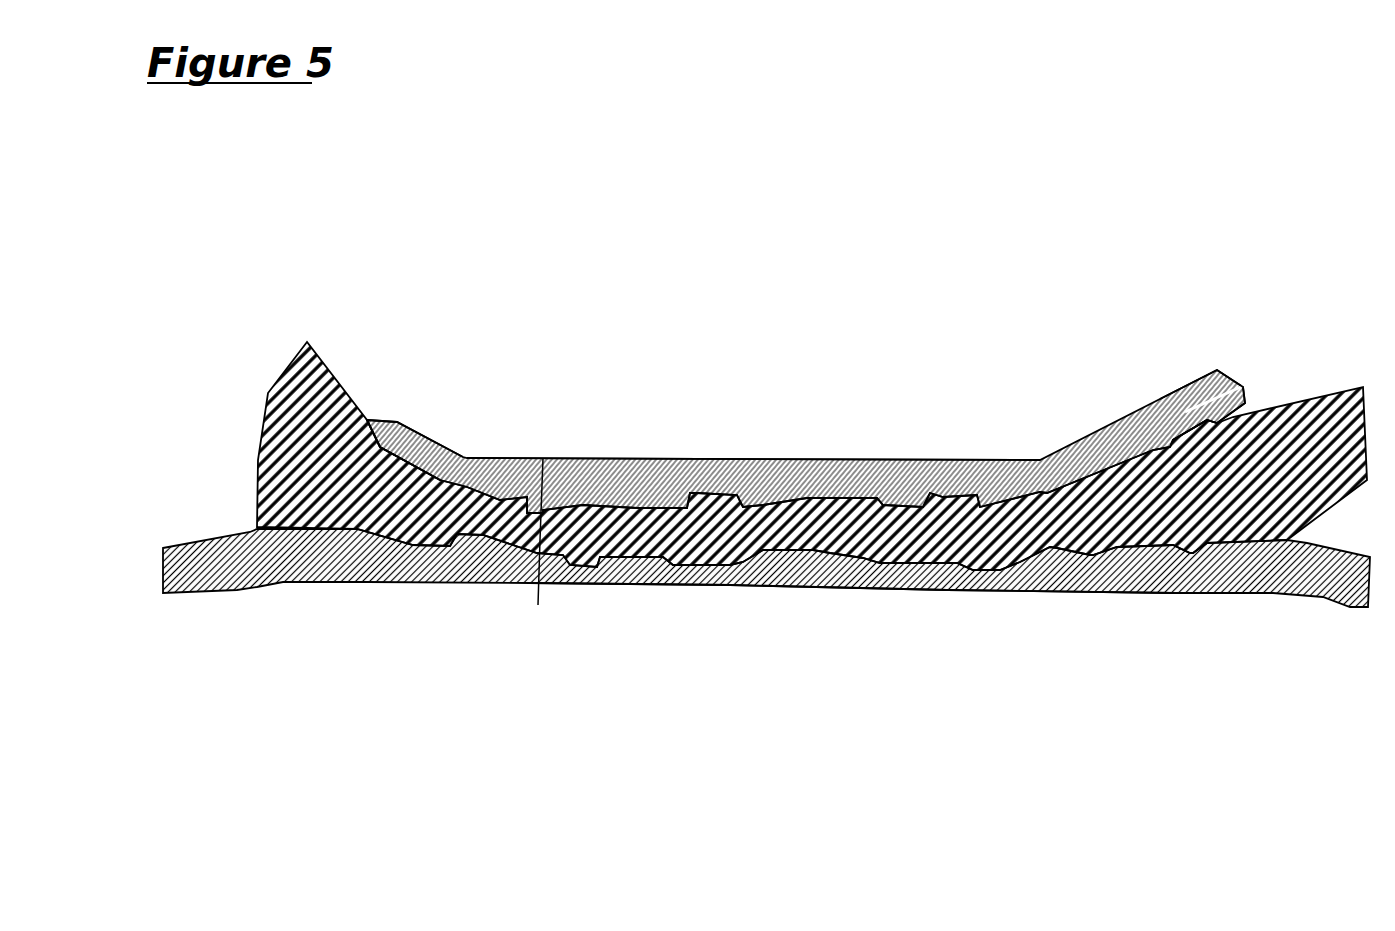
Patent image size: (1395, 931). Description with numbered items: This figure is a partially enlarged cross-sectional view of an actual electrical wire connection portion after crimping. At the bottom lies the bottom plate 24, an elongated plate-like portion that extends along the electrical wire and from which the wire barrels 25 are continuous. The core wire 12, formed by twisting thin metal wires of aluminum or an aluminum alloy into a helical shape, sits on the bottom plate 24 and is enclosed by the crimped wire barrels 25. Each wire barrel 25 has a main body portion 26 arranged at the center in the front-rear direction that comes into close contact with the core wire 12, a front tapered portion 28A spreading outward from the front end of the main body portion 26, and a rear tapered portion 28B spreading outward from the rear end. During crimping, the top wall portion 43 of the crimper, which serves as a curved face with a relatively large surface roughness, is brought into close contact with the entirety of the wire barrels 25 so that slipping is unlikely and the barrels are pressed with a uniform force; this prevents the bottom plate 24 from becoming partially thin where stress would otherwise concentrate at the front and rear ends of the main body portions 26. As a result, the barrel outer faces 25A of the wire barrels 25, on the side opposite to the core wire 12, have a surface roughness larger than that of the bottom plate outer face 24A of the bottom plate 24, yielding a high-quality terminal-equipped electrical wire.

The core wire 12 is at (812, 583).
The bottom plate 24 is at (766, 656).
The bottom plate outer face 24A is at (901, 712).
The wire barrel 25 is at (806, 354).
The main body portion 26 is at (806, 354).
The barrel outer face 25A is at (753, 322).
The front tapered portion 28A is at (400, 447).
The rear tapered portion 28B is at (1247, 387).
The top wall portion 43 is at (538, 605).